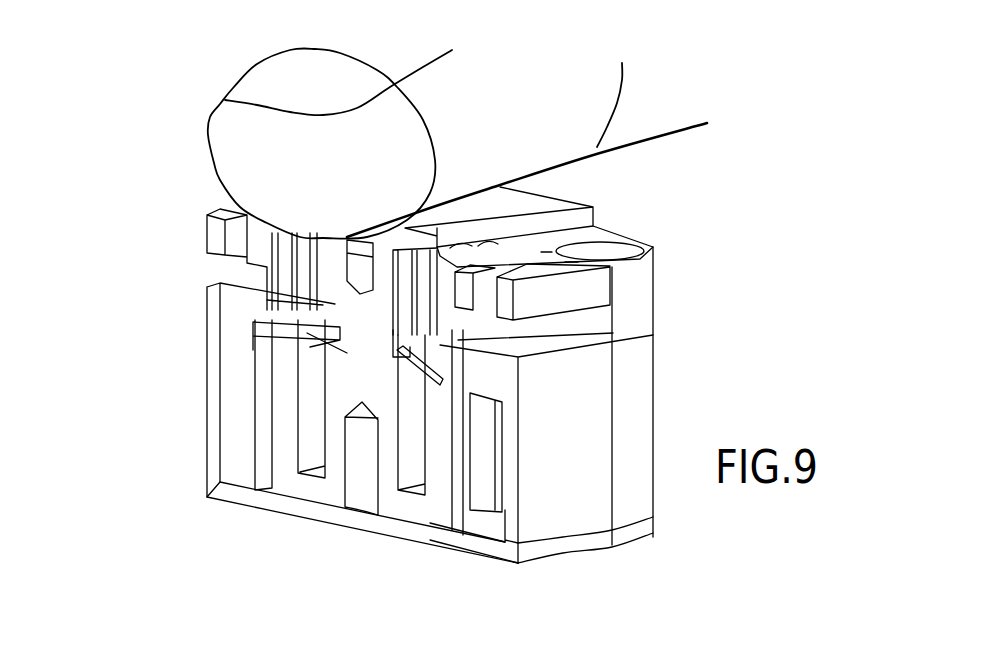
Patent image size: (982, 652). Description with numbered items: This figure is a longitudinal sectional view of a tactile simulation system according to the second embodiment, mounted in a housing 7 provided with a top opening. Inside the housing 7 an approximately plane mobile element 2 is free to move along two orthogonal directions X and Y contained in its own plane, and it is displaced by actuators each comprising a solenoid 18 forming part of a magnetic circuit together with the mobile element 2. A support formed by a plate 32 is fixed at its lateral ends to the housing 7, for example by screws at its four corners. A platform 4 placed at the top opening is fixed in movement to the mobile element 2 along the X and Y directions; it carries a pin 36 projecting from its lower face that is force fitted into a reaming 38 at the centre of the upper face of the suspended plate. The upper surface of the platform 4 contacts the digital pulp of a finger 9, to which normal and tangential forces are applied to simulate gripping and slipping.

The finger 9 is at (233, 127).
The platform 4 is at (533, 207).
The housing 7 is at (558, 523).
The solenoid 18 is at (243, 434).
The pin 36 is at (355, 262).
The reaming 38 is at (368, 291).
The mobile element 2 is at (323, 353).
The plate 32 is at (150, 253).